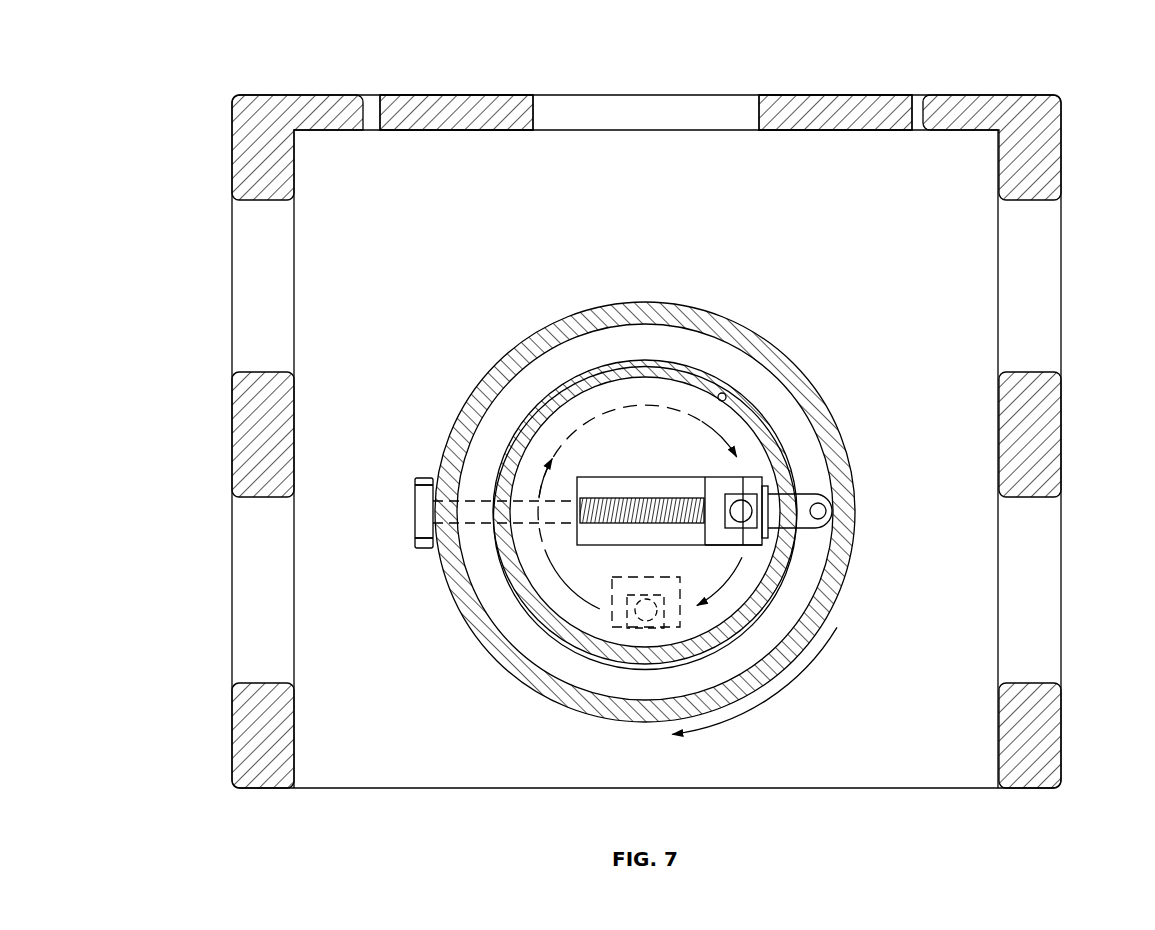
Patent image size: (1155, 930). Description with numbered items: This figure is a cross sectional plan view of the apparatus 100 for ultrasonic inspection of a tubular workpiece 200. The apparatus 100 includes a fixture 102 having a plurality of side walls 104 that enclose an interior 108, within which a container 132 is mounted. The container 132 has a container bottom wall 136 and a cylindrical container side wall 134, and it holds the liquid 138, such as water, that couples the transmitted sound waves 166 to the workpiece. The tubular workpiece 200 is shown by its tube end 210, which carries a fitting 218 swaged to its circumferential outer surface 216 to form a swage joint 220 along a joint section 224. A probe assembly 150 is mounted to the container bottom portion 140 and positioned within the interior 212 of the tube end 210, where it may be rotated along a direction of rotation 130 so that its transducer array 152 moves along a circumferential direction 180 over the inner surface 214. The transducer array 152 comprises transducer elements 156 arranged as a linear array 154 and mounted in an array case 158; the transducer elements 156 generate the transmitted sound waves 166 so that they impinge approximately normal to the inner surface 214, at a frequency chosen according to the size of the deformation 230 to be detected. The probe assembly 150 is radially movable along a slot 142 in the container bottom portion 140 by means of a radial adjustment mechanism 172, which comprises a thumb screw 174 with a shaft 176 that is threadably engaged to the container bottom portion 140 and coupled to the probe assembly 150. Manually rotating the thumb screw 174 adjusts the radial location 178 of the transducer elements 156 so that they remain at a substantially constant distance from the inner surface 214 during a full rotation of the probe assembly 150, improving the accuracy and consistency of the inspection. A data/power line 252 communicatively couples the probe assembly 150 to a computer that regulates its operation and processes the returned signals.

The apparatus 100 is at (241, 96).
The fixture 102 is at (276, 95).
The side walls 104 is at (240, 151).
The interior 108 is at (333, 166).
The direction of rotation 130 is at (532, 580).
The container 132 is at (500, 648).
The container side wall 134 is at (527, 680).
The container bottom wall 136 is at (580, 673).
The liquid 138 is at (527, 387).
The bottom portion 140 is at (555, 357).
The slot 142 is at (613, 365).
The probe assembly 150 is at (745, 470).
The transducer array 152 is at (780, 472).
The linear array 154 is at (753, 473).
The transducer elements 156 is at (770, 493).
The array case 158 is at (750, 547).
The transmitted sound waves 166 is at (765, 522).
The radial adjustment mechanism 172 is at (422, 480).
The thumb screw 174 is at (412, 545).
The shaft 176 is at (560, 450).
The radial location 178 is at (788, 640).
The circumferential direction 180 is at (738, 340).
The tubular workpiece 200 is at (635, 660).
The tube end 210 is at (700, 652).
The interior 212 is at (640, 495).
The inner surface 214 is at (757, 357).
The circumferential outer surface 216 is at (755, 397).
The fitting 218 is at (757, 583).
The swage joint 220 is at (652, 395).
The joint section 224 is at (683, 433).
The deformation 230 is at (738, 628).
The data/power line 252 is at (826, 512).